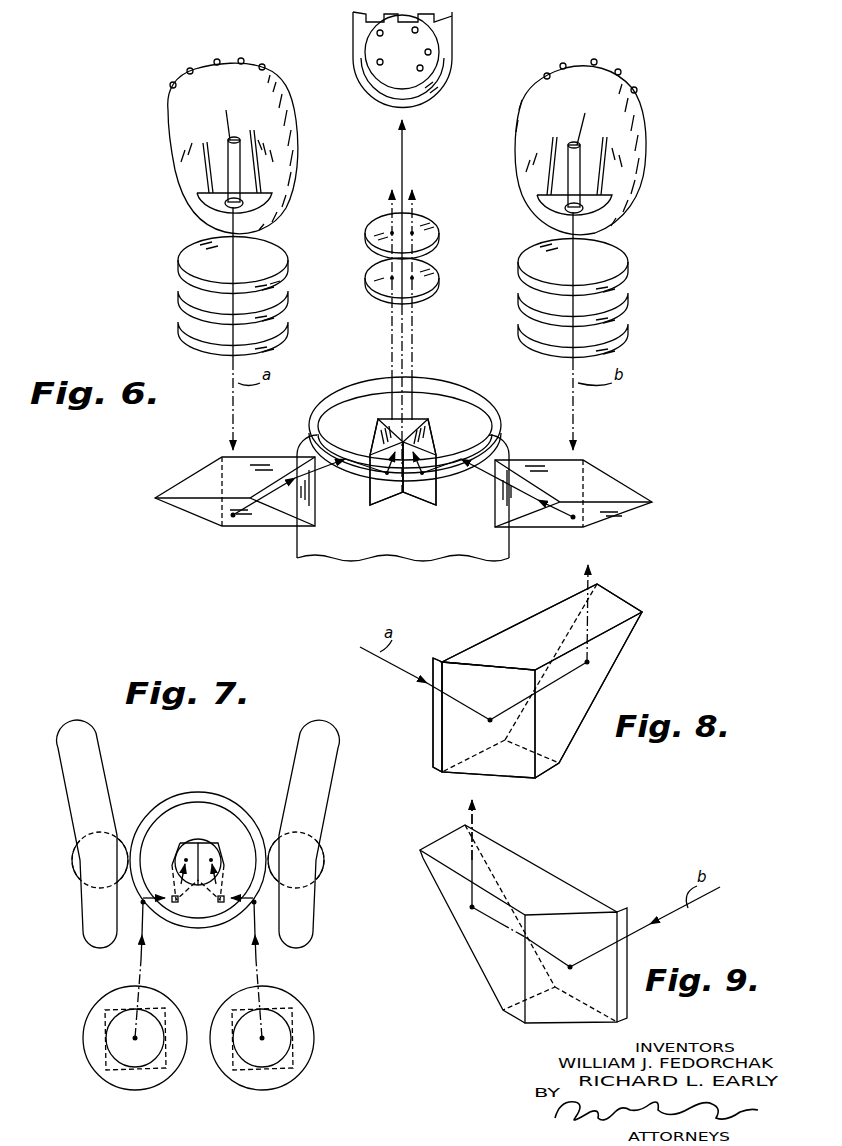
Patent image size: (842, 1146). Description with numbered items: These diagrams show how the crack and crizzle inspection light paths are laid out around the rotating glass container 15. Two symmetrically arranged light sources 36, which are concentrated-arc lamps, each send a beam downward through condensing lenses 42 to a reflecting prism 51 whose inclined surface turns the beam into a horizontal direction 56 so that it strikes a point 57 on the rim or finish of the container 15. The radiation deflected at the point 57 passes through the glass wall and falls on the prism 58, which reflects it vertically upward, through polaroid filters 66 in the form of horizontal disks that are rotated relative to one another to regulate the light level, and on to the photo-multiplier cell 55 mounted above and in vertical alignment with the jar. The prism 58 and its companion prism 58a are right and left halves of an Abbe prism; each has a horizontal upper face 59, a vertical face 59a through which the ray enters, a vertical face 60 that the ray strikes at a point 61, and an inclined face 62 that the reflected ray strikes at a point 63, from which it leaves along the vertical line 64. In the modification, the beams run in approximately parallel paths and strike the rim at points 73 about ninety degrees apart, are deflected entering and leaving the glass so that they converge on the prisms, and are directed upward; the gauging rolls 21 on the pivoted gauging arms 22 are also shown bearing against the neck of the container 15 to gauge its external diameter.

In FIG. 6, the container 15 is at (508, 447).
In FIG. 7, the container 15 is at (226, 802).
In FIG. 7, the gauging rolls 21 is at (74, 858).
In FIG. 7, the gauging arms 22 is at (74, 793).
In FIG. 6, the light sources 36 is at (298, 176).
In FIG. 6, the condensing lenses 42 is at (289, 305).
In FIG. 6, the reflecting prism 51 is at (212, 517).
In FIG. 7, the reflecting prism 51 is at (108, 1008).
In FIG. 6, the photo-multiplier cell 55 is at (432, 55).
In FIG. 6, the horizontal direction 56 is at (288, 478).
In FIG. 6, the point 57 is at (330, 448).
In FIG. 6, the prism 58 is at (382, 436).
In FIG. 7, the prism 58 is at (188, 843).
In FIG. 8, the prism 58 is at (477, 634).
In FIG. 6, the prism 58a is at (430, 437).
In FIG. 7, the prism 58a is at (213, 846).
In FIG. 9, the prism 58a is at (549, 862).
In FIG. 8, the horizontal upper face 59 is at (542, 620).
In FIG. 8, the vertical face 59a is at (433, 710).
In FIG. 8, the vertical face 60 is at (497, 676).
In FIG. 8, the point 61 is at (491, 724).
In FIG. 8, the inclined face 62 is at (625, 657).
In FIG. 8, the point 63 is at (589, 666).
In FIG. 6, the vertical line 64 is at (390, 332).
In FIG. 8, the vertical line 64 is at (592, 578).
In FIG. 9, the vertical line 64 is at (475, 828).
In FIG. 6, the polaroid filters 66 is at (430, 272).
In FIG. 7, the points 73 is at (143, 905).